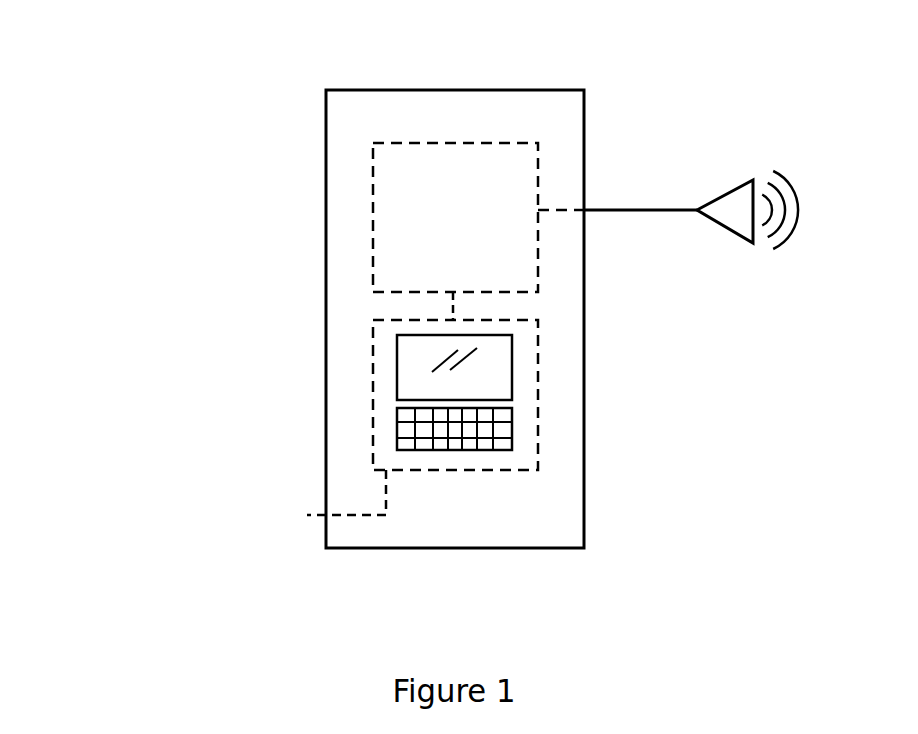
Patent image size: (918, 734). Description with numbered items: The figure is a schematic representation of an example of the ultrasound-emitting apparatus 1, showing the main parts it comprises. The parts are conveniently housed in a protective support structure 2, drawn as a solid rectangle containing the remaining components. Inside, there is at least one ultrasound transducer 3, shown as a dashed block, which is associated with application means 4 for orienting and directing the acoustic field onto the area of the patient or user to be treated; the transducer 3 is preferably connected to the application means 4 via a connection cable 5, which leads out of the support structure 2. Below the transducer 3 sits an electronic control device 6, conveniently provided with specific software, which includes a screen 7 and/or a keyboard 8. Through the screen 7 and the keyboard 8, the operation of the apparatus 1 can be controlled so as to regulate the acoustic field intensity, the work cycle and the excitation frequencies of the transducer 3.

The ultrasound-emitting apparatus 1 is at (220, 223).
The protective support structure 2 is at (338, 110).
The ultrasound transducer 3 is at (476, 190).
The application means 4 is at (727, 203).
The connection cable 5 is at (638, 213).
The electronic control device 6 is at (365, 378).
The screen 7 is at (498, 362).
The keyboard 8 is at (502, 428).